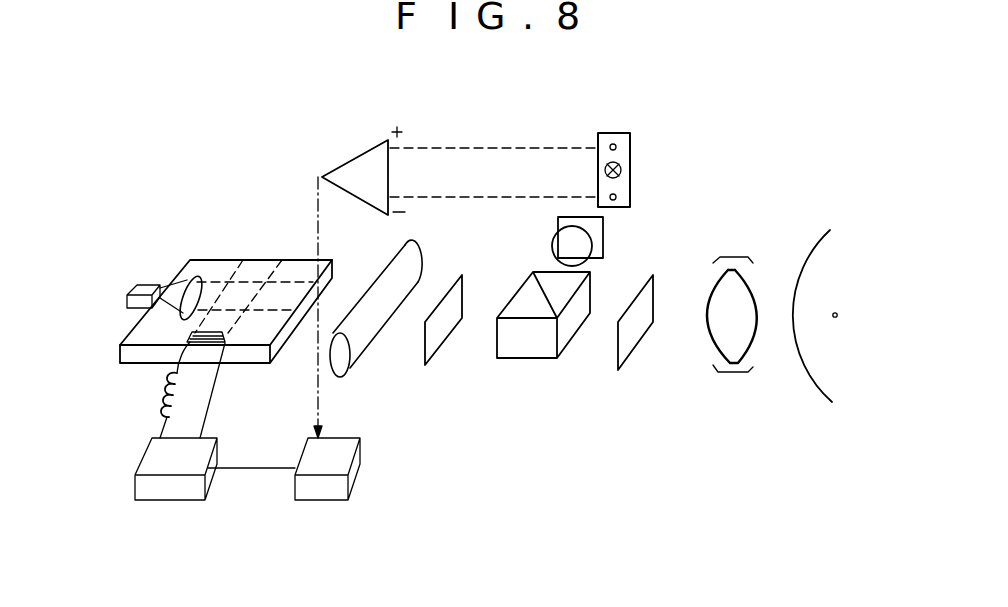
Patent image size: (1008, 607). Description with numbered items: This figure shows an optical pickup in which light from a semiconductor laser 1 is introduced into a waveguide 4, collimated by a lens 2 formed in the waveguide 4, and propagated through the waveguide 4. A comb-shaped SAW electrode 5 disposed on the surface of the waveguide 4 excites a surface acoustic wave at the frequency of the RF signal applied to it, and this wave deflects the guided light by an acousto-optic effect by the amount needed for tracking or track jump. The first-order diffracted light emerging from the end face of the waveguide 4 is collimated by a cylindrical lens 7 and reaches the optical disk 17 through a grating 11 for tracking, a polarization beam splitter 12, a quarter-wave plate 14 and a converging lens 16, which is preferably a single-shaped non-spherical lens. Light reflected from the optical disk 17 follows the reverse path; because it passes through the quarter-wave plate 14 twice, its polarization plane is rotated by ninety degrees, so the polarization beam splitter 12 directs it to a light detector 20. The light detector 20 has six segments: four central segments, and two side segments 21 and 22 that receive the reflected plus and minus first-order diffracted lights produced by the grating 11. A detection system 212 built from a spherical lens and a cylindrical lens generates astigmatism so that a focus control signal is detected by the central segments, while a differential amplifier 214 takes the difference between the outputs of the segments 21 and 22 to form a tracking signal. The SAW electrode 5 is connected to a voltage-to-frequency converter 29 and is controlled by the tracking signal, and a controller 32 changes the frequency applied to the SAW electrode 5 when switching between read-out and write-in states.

The semiconductor laser 1 is at (146, 284).
The lens 2 is at (196, 278).
The waveguide 4 is at (232, 258).
The SAW electrode 5 is at (183, 341).
The cylindrical lens 7 is at (360, 357).
The grating 11 is at (432, 358).
The polarization beam splitter 12 is at (542, 360).
The quarter-wave plate 14 is at (632, 358).
The converging lens 16 is at (713, 343).
The optical disk 17 is at (805, 370).
The light detector 20 is at (621, 170).
The segmental detector element 21 is at (616, 197).
The segmental detector element 22 is at (616, 147).
The voltage-to-frequency converter 29 is at (175, 500).
The controller 32 is at (323, 500).
The detection system 212 is at (603, 240).
The differential amplifier 214 is at (353, 158).